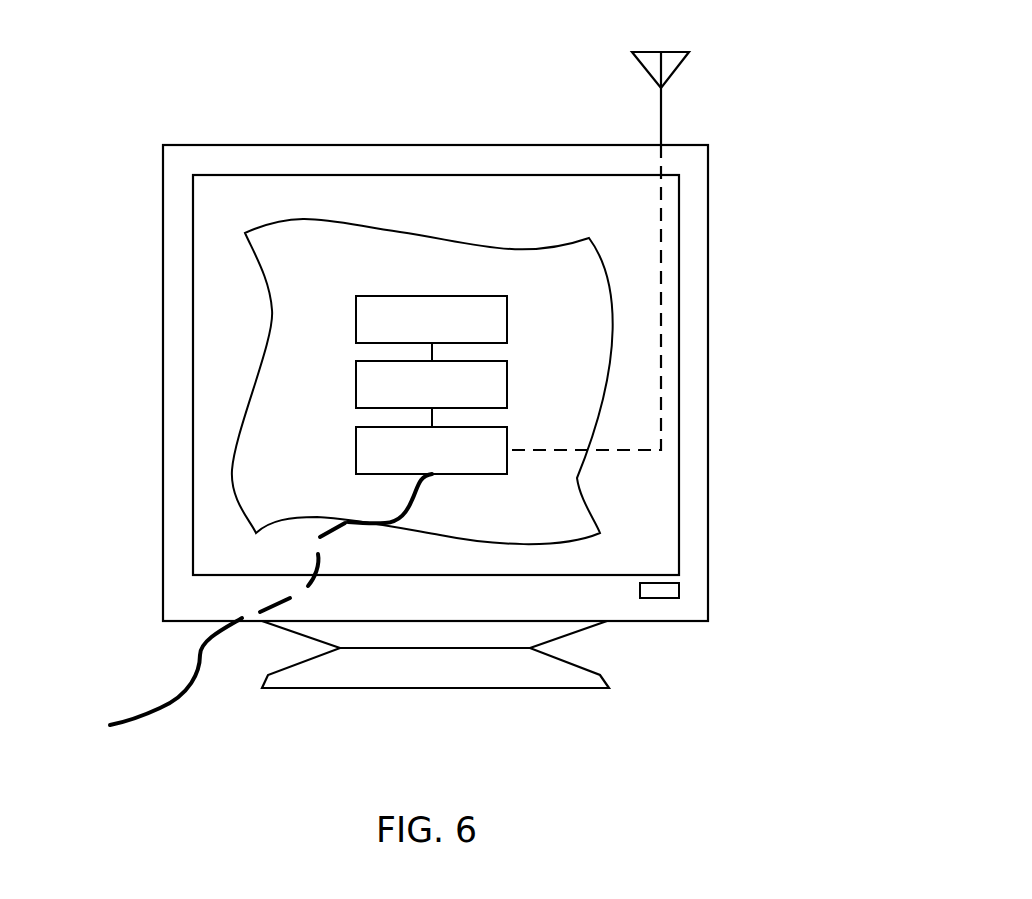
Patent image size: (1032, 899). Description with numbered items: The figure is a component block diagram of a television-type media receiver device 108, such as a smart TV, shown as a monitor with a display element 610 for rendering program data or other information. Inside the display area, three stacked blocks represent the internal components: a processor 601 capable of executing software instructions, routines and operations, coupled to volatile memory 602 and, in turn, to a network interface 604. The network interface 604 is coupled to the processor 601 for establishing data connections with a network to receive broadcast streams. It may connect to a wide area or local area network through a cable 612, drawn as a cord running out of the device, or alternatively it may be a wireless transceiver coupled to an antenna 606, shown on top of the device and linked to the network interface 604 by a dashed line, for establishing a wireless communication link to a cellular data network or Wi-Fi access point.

The media receiver device 108 is at (125, 124).
The display element 610 is at (520, 172).
The processor 601 is at (431, 319).
The volatile memory 602 is at (431, 375).
The network interface 604 is at (431, 441).
The antenna 606 is at (684, 60).
The cable 612 is at (160, 703).